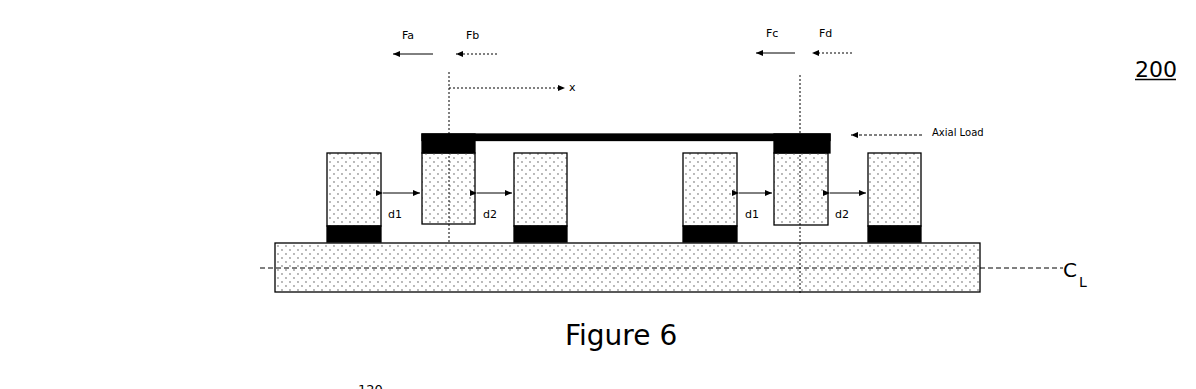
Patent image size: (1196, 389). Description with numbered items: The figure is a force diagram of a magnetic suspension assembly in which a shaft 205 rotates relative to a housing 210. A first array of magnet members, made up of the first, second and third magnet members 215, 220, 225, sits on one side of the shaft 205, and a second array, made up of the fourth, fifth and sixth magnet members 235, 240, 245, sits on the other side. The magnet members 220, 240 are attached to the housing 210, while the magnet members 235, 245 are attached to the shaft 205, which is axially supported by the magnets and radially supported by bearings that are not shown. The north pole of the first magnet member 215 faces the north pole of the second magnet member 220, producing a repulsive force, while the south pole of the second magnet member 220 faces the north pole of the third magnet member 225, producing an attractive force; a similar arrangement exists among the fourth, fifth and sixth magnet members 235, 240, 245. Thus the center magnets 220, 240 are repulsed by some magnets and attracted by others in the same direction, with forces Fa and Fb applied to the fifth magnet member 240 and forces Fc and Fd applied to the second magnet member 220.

The shaft 205 is at (945, 288).
The housing 210 is at (671, 135).
The first magnet member 215 is at (898, 173).
The second magnet member 220 is at (832, 147).
The third magnet member 225 is at (718, 167).
The fourth magnet member 235 is at (550, 168).
The fifth magnet member 240 is at (445, 167).
The sixth magnet member 245 is at (347, 175).